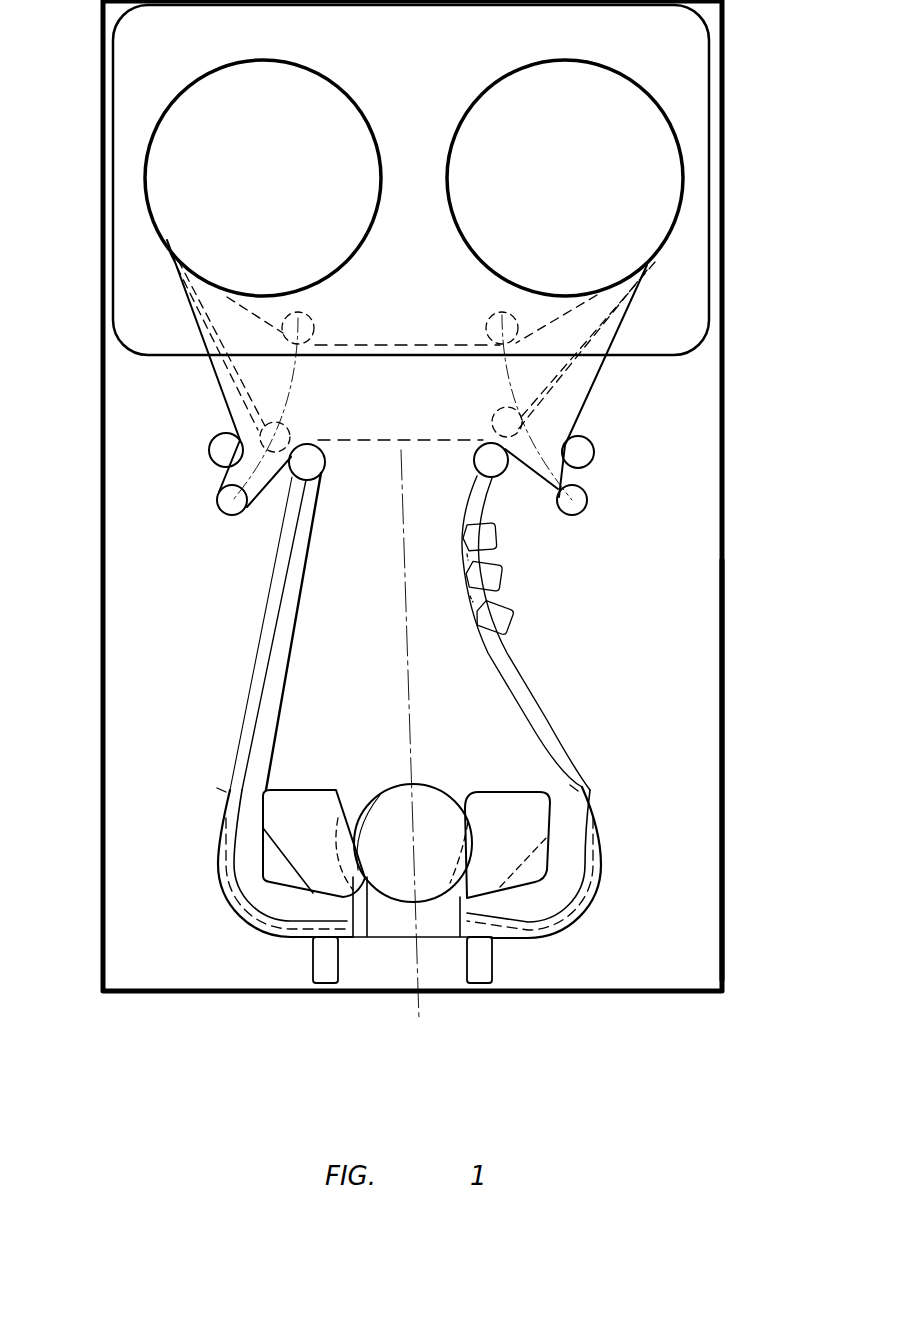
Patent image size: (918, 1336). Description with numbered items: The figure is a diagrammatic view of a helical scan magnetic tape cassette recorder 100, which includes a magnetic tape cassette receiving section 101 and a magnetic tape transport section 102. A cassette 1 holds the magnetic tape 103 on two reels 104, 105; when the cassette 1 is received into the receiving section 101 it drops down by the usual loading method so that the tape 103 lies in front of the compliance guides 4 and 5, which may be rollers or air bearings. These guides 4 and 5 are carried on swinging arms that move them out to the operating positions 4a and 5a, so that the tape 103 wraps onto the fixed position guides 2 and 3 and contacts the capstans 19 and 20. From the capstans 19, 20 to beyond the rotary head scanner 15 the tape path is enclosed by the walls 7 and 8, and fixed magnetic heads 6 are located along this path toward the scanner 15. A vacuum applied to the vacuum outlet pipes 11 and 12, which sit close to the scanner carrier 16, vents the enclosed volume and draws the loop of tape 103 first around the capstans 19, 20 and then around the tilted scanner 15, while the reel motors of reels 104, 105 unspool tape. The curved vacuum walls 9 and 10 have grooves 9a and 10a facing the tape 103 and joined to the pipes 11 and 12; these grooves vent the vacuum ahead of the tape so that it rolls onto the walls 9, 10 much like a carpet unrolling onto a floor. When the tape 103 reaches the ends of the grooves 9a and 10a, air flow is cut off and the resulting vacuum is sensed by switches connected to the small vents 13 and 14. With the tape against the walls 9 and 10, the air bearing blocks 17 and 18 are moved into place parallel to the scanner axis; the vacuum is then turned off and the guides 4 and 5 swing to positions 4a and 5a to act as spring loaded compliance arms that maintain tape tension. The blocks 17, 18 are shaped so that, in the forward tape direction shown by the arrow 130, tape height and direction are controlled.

The cassette 1 is at (709, 98).
The fixed position guide 2 is at (212, 440).
The fixed position guide 3 is at (584, 448).
The compliance guide 4 is at (313, 319).
The operating position of compliance guide 4a is at (219, 494).
The compliance guide 5 is at (504, 313).
The operating position of compliance guide 5a is at (587, 503).
The fixed magnetic heads 6 is at (497, 538).
The wall 7 is at (260, 640).
The wall 8 is at (522, 679).
The curved vacuum wall 9 is at (222, 872).
The vacuum groove 9a is at (244, 910).
The curved vacuum wall 10 is at (604, 858).
The vacuum groove 10a is at (587, 893).
The vacuum outlet pipe 11 is at (312, 971).
The vacuum outlet pipe 12 is at (492, 965).
The small vent 13 is at (224, 790).
The small vent 14 is at (567, 790).
The rotary head scanner 15 is at (430, 784).
The scanner carrier 16 is at (439, 941).
The air bearing block 17 is at (295, 790).
The air bearing block 18 is at (516, 792).
The capstan 19 is at (310, 445).
The capstan 20 is at (492, 444).
The recorder 100 is at (733, 404).
The magnetic tape cassette receiving section 101 is at (724, 12).
The magnetic tape transport section 102 is at (724, 553).
The magnetic tape 103 is at (401, 345).
The reel 104 is at (331, 79).
The reel 105 is at (606, 69).
The arrow 130 is at (302, 712).